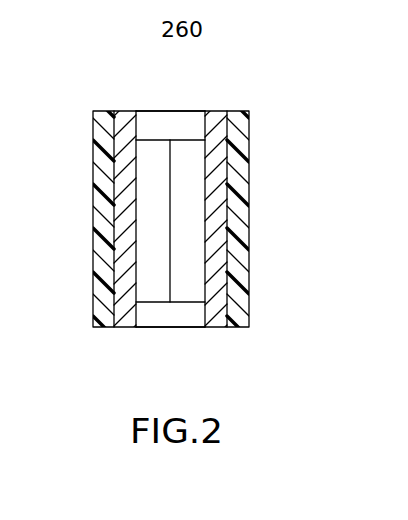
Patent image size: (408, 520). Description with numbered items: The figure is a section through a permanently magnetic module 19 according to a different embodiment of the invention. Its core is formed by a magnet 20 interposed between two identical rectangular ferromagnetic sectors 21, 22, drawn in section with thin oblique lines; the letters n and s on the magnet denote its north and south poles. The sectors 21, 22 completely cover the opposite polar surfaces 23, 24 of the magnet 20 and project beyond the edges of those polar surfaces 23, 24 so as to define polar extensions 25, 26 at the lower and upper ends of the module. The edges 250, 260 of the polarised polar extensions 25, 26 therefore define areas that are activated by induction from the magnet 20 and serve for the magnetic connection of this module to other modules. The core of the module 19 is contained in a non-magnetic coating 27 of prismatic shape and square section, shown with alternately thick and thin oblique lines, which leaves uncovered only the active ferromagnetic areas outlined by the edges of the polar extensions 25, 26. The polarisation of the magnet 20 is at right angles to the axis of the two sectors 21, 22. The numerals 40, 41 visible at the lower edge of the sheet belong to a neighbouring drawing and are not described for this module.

The permanently magnetic module 19 is at (259, 279).
The magnet 20 is at (180, 150).
The rectangular ferromagnetic sector 21 is at (130, 190).
The rectangular ferromagnetic sector 22 is at (215, 176).
The polar surface 23 is at (128, 238).
The polar surface 24 is at (208, 228).
The polar extension 25 is at (127, 315).
The polar extension 26 is at (125, 130).
The non-magnetic coating 27 is at (105, 277).
The edge of polar extension 250 is at (210, 318).
The edge of polar extension 260 is at (116, 130).
The housing 40 is at (397, 508).
The base 41 is at (314, 508).